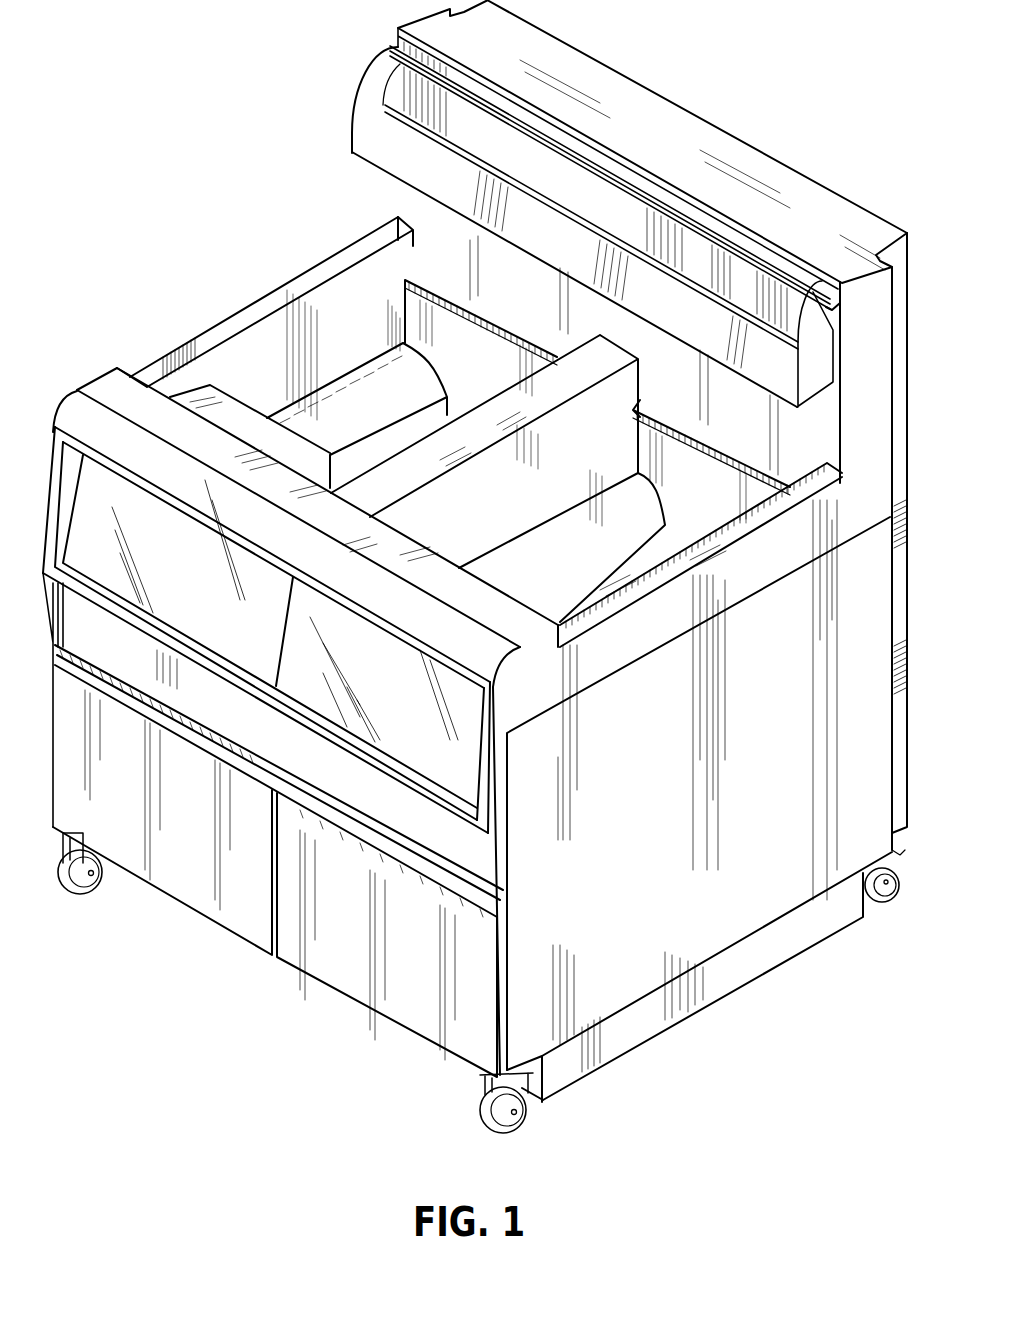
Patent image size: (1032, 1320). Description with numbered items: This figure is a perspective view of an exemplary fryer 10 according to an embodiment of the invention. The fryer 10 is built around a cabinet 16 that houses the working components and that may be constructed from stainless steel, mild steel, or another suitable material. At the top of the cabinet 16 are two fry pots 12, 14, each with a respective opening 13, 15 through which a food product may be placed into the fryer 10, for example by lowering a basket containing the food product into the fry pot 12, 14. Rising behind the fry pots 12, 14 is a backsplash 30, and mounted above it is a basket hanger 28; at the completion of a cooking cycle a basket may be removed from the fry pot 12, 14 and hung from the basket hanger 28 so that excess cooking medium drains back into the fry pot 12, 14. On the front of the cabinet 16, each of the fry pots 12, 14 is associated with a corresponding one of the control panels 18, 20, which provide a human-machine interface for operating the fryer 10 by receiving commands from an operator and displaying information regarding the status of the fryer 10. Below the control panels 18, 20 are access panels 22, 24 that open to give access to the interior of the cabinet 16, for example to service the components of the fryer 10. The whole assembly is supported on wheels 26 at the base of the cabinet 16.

The fryer 10 is at (122, 60).
The fry pot 12 is at (451, 330).
The opening 13 is at (407, 257).
The fry pot 14 is at (677, 459).
The opening 15 is at (634, 385).
The cabinet 16 is at (777, 790).
The control panel 18 is at (194, 588).
The control panel 20 is at (409, 698).
The access panel 22 is at (129, 813).
The access panel 24 is at (367, 938).
The wheels 26 is at (73, 897).
The basket hanger 28 is at (354, 100).
The backsplash 30 is at (408, 200).